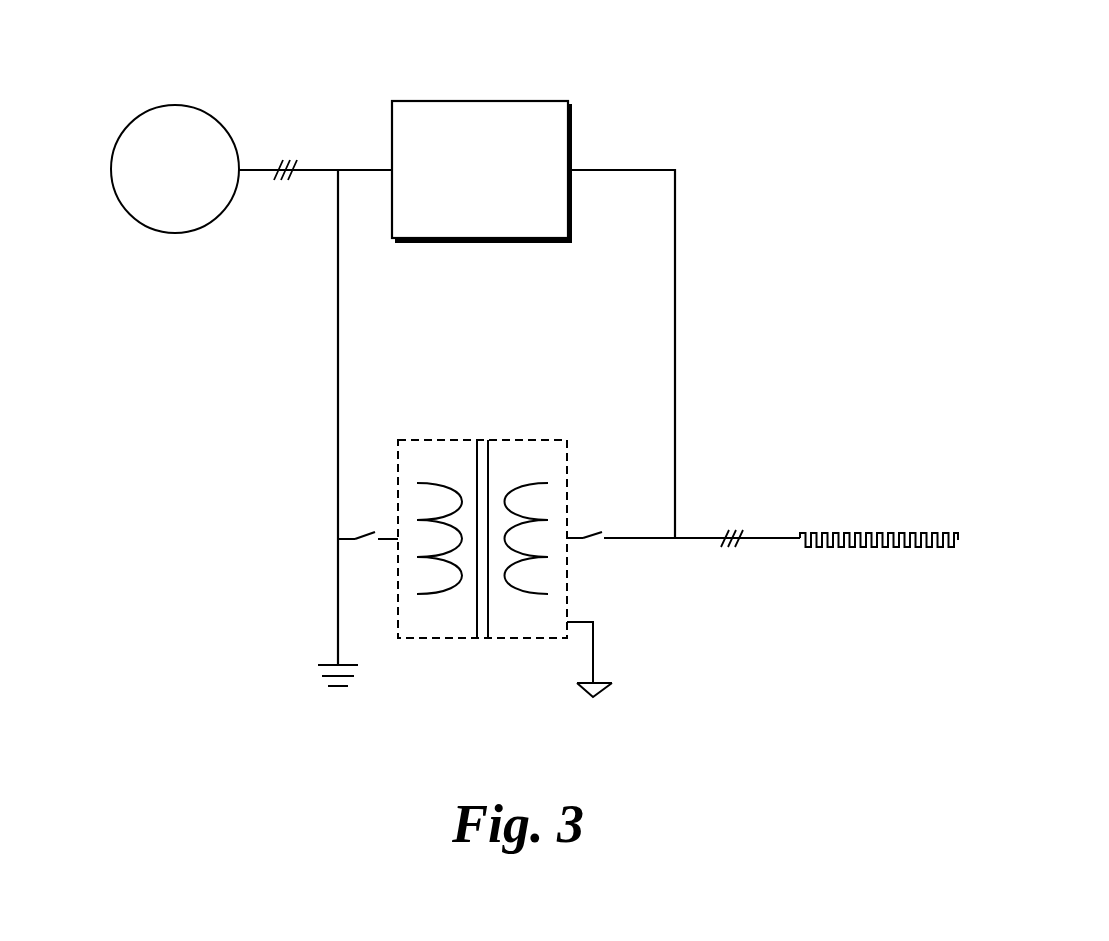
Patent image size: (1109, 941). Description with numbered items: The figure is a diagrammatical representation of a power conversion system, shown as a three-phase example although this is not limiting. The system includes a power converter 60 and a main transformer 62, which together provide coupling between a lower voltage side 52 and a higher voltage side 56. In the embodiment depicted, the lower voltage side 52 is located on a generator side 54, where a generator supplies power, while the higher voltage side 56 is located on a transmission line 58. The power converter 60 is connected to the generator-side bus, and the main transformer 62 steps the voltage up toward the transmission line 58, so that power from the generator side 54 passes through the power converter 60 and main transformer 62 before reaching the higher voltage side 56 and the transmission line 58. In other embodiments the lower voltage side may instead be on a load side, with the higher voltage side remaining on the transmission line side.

The lower voltage side 52 is at (262, 170).
The generator side 54 is at (132, 118).
The higher voltage side 56 is at (703, 538).
The transmission line 58 is at (900, 518).
The power converter 60 is at (498, 215).
The main transformer 62 is at (567, 440).